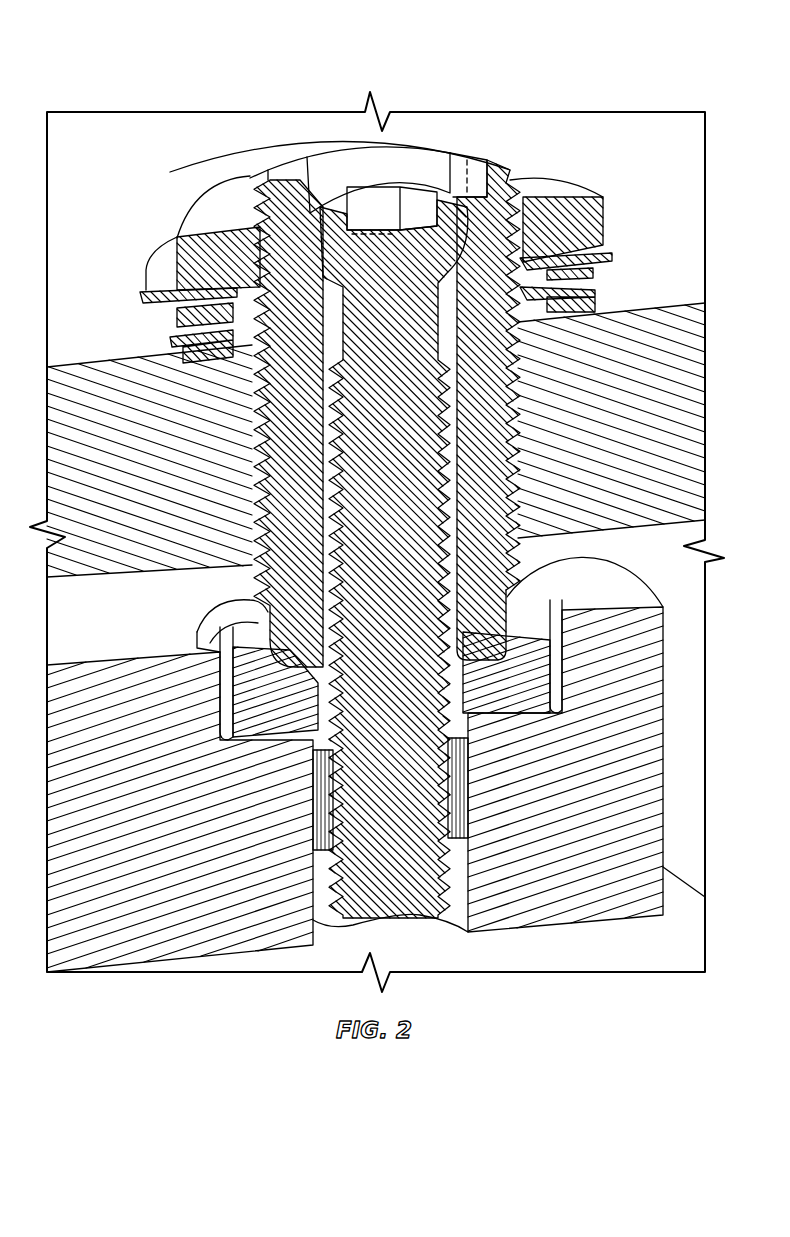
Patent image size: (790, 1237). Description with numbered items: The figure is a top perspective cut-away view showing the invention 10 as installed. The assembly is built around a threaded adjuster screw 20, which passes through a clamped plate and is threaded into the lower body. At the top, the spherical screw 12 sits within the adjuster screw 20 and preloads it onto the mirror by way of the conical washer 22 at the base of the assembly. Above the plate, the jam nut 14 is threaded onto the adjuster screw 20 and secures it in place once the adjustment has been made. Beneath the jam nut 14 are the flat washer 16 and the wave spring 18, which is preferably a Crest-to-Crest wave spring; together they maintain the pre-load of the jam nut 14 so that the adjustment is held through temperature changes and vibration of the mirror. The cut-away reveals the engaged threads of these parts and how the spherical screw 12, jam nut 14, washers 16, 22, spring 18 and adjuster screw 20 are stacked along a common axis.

The invention 10 is at (303, 80).
The spherical screw 12 is at (378, 273).
The jam nut 14 is at (562, 210).
The flat washer 16 is at (628, 260).
The wave spring 18 is at (587, 307).
The adjuster screw 20 is at (493, 391).
The conical washer 22 is at (270, 730).